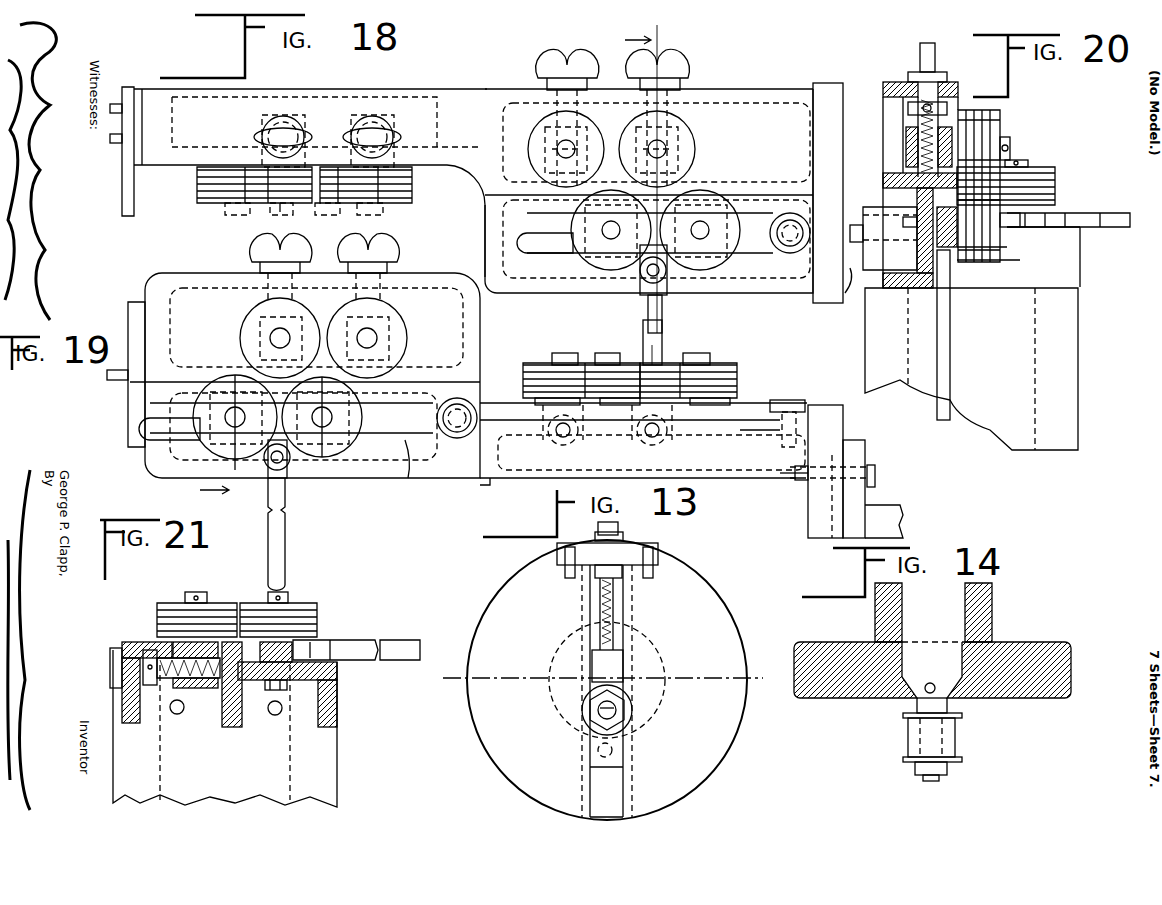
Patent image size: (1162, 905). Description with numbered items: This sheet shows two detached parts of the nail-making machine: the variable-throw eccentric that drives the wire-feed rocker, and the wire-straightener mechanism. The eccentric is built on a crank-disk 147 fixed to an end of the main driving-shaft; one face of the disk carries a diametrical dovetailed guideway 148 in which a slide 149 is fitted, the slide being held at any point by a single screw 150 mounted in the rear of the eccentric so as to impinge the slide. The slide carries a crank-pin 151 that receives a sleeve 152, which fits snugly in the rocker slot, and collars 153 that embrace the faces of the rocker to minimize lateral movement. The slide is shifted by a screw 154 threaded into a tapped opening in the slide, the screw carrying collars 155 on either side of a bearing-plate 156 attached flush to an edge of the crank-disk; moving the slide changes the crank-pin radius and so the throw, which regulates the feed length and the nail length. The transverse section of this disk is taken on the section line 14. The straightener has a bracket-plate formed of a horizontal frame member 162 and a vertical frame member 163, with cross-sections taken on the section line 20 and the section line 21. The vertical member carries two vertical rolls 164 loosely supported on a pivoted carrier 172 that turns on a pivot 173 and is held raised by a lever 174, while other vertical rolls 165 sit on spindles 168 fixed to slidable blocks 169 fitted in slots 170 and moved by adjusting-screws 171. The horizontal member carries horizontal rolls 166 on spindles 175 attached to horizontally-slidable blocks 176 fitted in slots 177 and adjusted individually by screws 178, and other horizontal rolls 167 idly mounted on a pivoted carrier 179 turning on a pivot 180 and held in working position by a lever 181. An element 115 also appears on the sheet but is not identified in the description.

In FIG. 13, the section line 14 is at (603, 680).
In FIG. 18, the section line 20 is at (284, 218).
In FIG. 19, the section line 20 is at (222, 501).
In FIG. 18, the section line 21 is at (646, 170).
In FIG. 19, the section line 21 is at (655, 342).
In FIG. 19, the frame block 115 is at (903, 522).
In FIG. 13, the crank-disk 147 is at (490, 737).
In FIG. 14, the crank-disk 147 is at (830, 698).
In FIG. 13, the dovetailed guideway 148 is at (610, 788).
In FIG. 14, the dovetailed guideway 148 is at (950, 690).
In FIG. 13, the slide 149 is at (610, 668).
In FIG. 14, the slide 149 is at (933, 683).
In FIG. 13, the screw 150 is at (597, 752).
In FIG. 13, the crank-pin 151 is at (598, 712).
In FIG. 14, the crank-pin 151 is at (955, 740).
In FIG. 14, the sleeve 152 is at (912, 735).
In FIG. 13, the collars 153 is at (625, 712).
In FIG. 14, the collars 153 is at (903, 716).
In FIG. 13, the screw 154 is at (600, 610).
In FIG. 13, the collars 155 is at (623, 535).
In FIG. 13, the bearing-plate 156 is at (583, 555).
In FIG. 18, the horizontal frame member 162 is at (753, 293).
In FIG. 19, the horizontal frame member 162 is at (765, 478).
In FIG. 21, the horizontal frame member 162 is at (337, 708).
In FIG. 18, the vertical frame member 163 is at (305, 89).
In FIG. 19, the vertical frame member 163 is at (195, 273).
In FIG. 20, the vertical frame member 163 is at (890, 82).
In FIG. 18, the vertical rolls 164 is at (205, 203).
In FIG. 19, the vertical rolls 164 is at (195, 405).
In FIG. 20, the vertical rolls 164 is at (975, 250).
In FIG. 18, the vertical rolls 165 is at (262, 195).
In FIG. 19, the vertical rolls 165 is at (250, 330).
In FIG. 20, the vertical rolls 165 is at (1002, 110).
In FIG. 18, the horizontal rolls 166 is at (548, 125).
In FIG. 19, the horizontal rolls 166 is at (537, 363).
In FIG. 20, the horizontal rolls 166 is at (890, 207).
In FIG. 21, the horizontal rolls 166 is at (212, 603).
In FIG. 18, the horizontal rolls 167 is at (600, 265).
In FIG. 19, the horizontal rolls 167 is at (595, 363).
In FIG. 20, the horizontal rolls 167 is at (1056, 168).
In FIG. 21, the horizontal rolls 167 is at (312, 603).
In FIG. 18, the spindles 168 is at (293, 212).
In FIG. 20, the spindles 168 is at (1011, 140).
In FIG. 18, the slidable blocks 169 is at (266, 115).
In FIG. 19, the slidable blocks 169 is at (260, 340).
In FIG. 20, the slidable blocks 169 is at (906, 146).
In FIG. 20, the slots 170 is at (948, 110).
In FIG. 18, the adjusting-screws 171 is at (263, 130).
In FIG. 19, the adjusting-screws 171 is at (262, 250).
In FIG. 20, the adjusting-screws 171 is at (918, 118).
In FIG. 19, the pivoted carrier 172 is at (410, 478).
In FIG. 20, the pivoted carrier 172 is at (950, 245).
In FIG. 18, the pivot 173 is at (852, 301).
In FIG. 19, the pivot 173 is at (458, 435).
In FIG. 19, the lever 174 is at (287, 540).
In FIG. 20, the lever 174 is at (950, 398).
In FIG. 18, the spindles 175 is at (560, 152).
In FIG. 19, the spindles 175 is at (562, 353).
In FIG. 20, the spindles 175 is at (905, 227).
In FIG. 21, the spindles 175 is at (198, 592).
In FIG. 18, the horizontally-slidable blocks 176 is at (548, 138).
In FIG. 19, the horizontally-slidable blocks 176 is at (555, 443).
In FIG. 21, the horizontally-slidable blocks 176 is at (197, 690).
In FIG. 21, the slots 177 is at (165, 648).
In FIG. 18, the screws 178 is at (560, 48).
In FIG. 19, the screws 178 is at (640, 443).
In FIG. 21, the screws 178 is at (165, 678).
In FIG. 18, the pivoted carrier 179 is at (550, 245).
In FIG. 19, the pivoted carrier 179 is at (738, 420).
In FIG. 20, the pivoted carrier 179 is at (1022, 228).
In FIG. 21, the pivoted carrier 179 is at (262, 680).
In FIG. 18, the pivot 180 is at (790, 253).
In FIG. 19, the pivot 180 is at (795, 400).
In FIG. 18, the lever 181 is at (662, 305).
In FIG. 20, the lever 181 is at (1085, 213).
In FIG. 21, the lever 181 is at (365, 640).